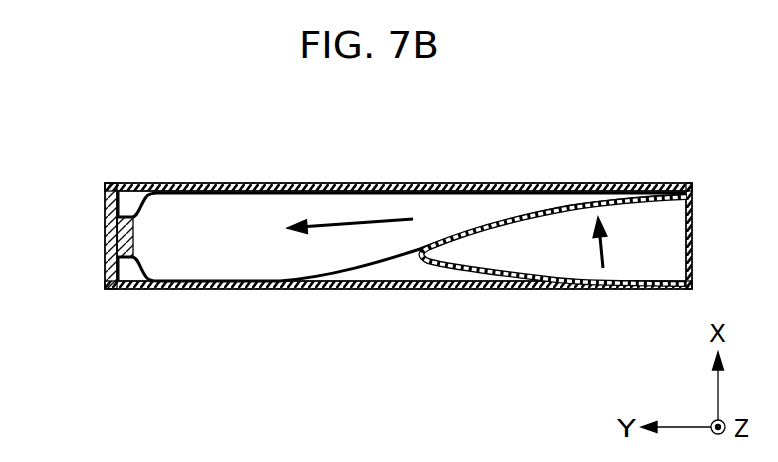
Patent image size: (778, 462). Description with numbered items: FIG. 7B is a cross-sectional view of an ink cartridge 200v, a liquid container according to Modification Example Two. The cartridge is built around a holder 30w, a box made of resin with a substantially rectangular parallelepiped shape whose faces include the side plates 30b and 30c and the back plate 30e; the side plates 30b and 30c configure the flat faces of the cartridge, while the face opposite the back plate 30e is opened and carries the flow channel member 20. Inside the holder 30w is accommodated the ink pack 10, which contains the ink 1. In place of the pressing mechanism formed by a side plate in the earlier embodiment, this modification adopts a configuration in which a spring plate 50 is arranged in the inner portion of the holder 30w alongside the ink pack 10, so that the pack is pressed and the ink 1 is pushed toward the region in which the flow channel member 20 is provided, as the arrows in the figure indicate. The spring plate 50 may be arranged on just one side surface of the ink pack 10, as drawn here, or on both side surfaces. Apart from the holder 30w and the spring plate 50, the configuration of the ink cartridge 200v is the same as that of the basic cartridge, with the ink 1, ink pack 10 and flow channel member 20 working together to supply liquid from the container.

The ink cartridge 200v is at (615, 120).
The holder 30w is at (453, 178).
The side plate 30c is at (338, 185).
The side plate 30b is at (357, 287).
The back plate 30e is at (691, 212).
The flow channel member 20 is at (117, 232).
The ink pack 10 is at (164, 198).
The spring plate 50 is at (420, 267).
The ink 1 is at (238, 248).